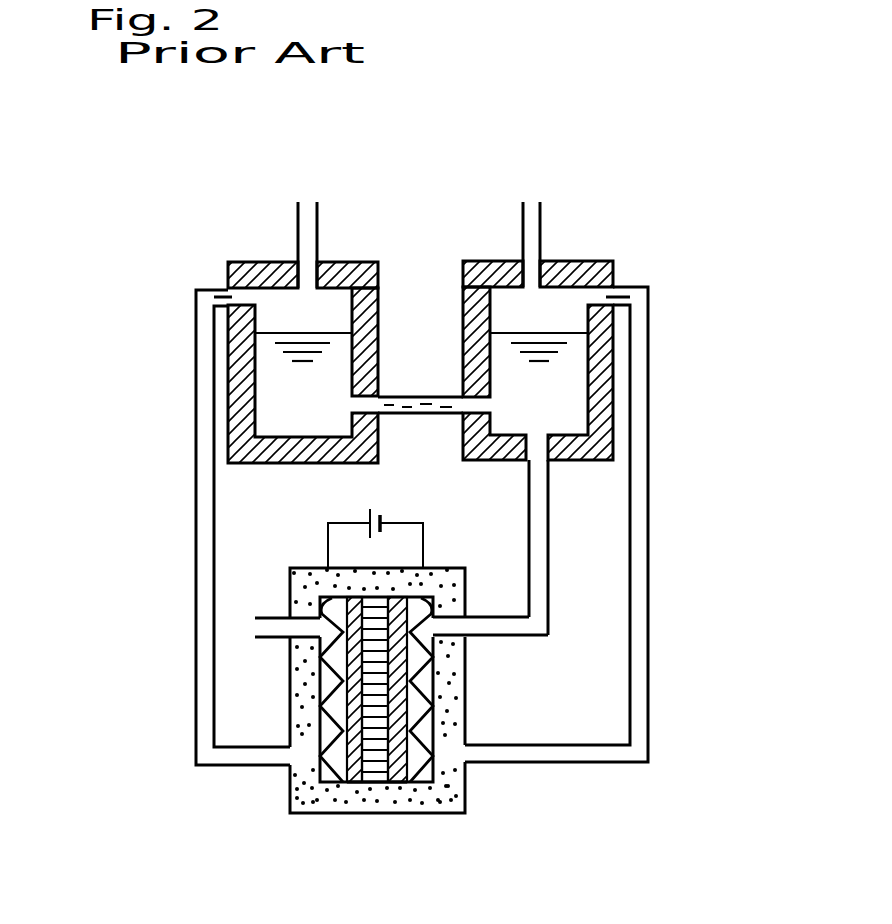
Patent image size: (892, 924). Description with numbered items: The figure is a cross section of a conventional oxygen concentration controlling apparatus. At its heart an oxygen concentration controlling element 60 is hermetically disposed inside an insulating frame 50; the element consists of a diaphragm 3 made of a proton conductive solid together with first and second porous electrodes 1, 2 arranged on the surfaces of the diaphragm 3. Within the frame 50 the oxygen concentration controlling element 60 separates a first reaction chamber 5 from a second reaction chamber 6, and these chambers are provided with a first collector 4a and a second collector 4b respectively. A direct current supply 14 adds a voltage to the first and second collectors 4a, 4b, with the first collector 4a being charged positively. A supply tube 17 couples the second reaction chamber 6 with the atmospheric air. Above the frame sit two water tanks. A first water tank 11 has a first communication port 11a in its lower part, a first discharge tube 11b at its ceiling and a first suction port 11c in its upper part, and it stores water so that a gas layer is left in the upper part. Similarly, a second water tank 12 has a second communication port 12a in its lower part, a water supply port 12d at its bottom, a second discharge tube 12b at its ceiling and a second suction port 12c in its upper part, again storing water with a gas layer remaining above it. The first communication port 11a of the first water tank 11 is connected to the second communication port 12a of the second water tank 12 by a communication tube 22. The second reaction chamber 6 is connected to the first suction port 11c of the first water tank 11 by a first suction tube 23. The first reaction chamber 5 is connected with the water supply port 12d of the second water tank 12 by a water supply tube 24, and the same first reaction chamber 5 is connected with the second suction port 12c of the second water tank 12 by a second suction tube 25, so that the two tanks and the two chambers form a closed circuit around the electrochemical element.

The first water tank 11 is at (237, 262).
The first communication port 11a is at (383, 396).
The first discharge tube 11b is at (306, 202).
The first suction port 11c is at (232, 297).
The second water tank 12 is at (587, 261).
The second communication port 12a is at (458, 397).
The second discharge tube 12b is at (533, 202).
The second suction port 12c is at (607, 298).
The water supply port 12d is at (536, 448).
The communication tube 22 is at (422, 414).
The first suction tube 23 is at (197, 467).
The water supply tube 24 is at (546, 606).
The second suction tube 25 is at (649, 532).
The direct current supply 14 is at (370, 507).
The supply tube 17 is at (263, 613).
The insulating frame 50 is at (313, 815).
The oxygen concentration controlling element 60 is at (403, 784).
The first reaction chamber 5 is at (392, 717).
The first collector 4a is at (422, 682).
The second collector 4b is at (342, 692).
The second reaction chamber 6 is at (322, 712).
The first porous electrode 1 is at (432, 770).
The second porous electrode 2 is at (360, 786).
The diaphragm 3 is at (382, 786).